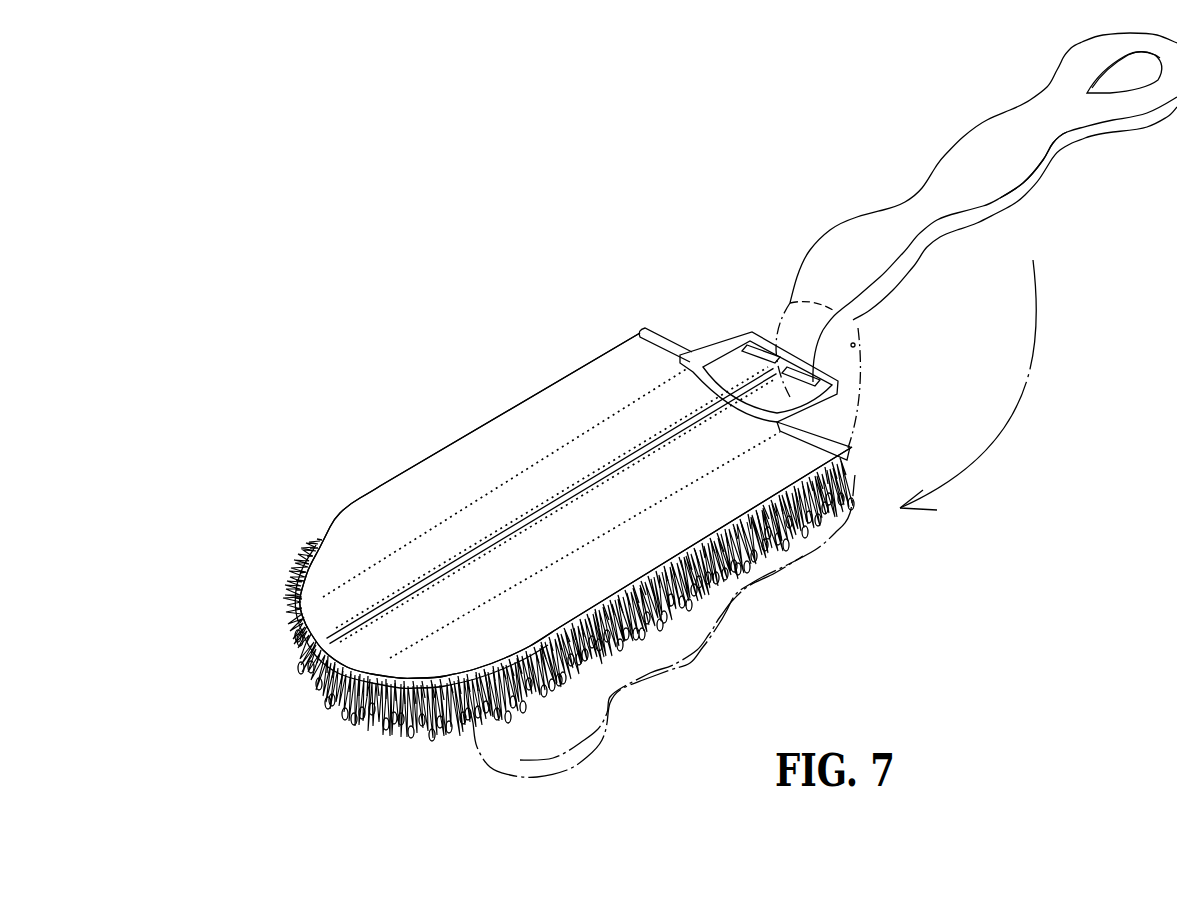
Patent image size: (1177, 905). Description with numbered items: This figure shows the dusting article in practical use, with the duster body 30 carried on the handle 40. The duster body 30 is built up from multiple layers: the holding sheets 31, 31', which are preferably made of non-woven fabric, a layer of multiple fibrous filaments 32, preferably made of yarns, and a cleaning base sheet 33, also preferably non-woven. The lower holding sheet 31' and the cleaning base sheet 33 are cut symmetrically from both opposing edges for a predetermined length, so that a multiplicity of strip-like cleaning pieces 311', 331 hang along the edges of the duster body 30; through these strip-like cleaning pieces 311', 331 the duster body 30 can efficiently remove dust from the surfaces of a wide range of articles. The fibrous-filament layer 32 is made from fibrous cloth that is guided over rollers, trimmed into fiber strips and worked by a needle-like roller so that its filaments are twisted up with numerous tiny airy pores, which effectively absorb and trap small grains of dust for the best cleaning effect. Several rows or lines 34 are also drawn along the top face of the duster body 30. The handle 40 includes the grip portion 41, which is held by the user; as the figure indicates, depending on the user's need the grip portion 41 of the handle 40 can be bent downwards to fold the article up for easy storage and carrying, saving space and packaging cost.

The duster body 30 is at (479, 397).
The holding sheet 31 is at (550, 510).
The holding sheet 31' is at (252, 596).
The strip-like cleaning pieces 311' is at (252, 624).
The fibrous-filament layer 32 is at (400, 727).
The cleaning base sheet 33 is at (320, 703).
The strip-like cleaning pieces 331 is at (560, 625).
The grooves / bristle rows 34 is at (409, 537).
The handle 40 is at (877, 172).
The grip portion 41 is at (1062, 170).